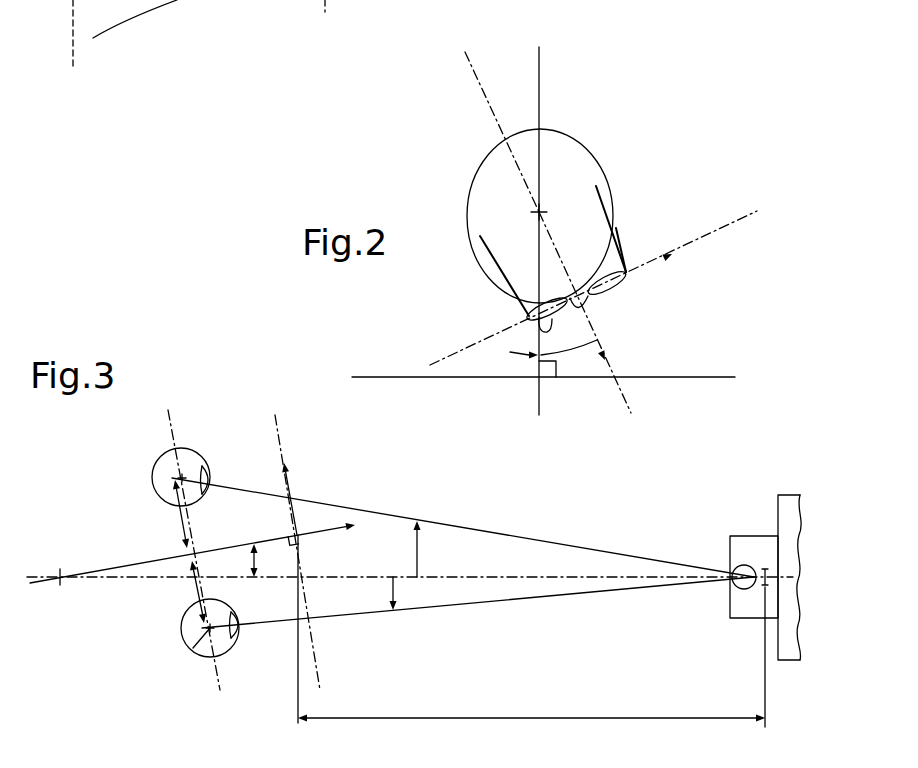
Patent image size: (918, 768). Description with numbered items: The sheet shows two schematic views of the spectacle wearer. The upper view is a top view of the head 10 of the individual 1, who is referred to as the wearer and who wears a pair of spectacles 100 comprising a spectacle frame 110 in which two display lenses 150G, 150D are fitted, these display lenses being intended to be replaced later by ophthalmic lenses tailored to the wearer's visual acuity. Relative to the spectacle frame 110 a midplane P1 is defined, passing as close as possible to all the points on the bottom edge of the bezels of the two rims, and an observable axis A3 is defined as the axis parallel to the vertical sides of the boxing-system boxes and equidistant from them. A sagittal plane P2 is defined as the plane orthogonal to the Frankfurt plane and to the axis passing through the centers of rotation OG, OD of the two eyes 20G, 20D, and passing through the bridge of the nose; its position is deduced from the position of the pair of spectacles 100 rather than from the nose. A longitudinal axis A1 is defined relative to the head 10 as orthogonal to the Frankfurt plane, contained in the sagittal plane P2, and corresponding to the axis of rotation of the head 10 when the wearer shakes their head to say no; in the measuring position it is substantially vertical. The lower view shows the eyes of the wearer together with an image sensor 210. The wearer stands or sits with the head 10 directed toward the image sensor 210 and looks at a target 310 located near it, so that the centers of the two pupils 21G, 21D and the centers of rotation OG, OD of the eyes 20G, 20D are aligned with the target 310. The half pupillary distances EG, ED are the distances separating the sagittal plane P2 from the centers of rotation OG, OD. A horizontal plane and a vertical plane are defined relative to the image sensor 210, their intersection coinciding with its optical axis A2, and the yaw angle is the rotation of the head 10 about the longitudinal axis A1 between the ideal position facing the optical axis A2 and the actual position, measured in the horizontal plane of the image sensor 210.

In FIG. 2, the individual 1 is at (609, 95).
In FIG. 2, the head 10 is at (596, 146).
In FIG. 2, the pair of spectacles 100 is at (614, 198).
In FIG. 2, the spectacle frame 110 is at (617, 219).
In FIG. 2, the left display lens 150G is at (612, 292).
In FIG. 2, the right display lens 150D is at (532, 326).
In FIG. 2, the longitudinal axis A1 is at (537, 212).
In FIG. 3, the longitudinal axis A1 is at (60, 575).
In FIG. 2, the optical axis A2 is at (540, 77).
In FIG. 3, the optical axis A2 is at (445, 577).
In FIG. 2, the observable axis A3 is at (607, 334).
In FIG. 3, the observable axis A3 is at (297, 535).
In FIG. 2, the midplane P1 is at (753, 216).
In FIG. 2, the sagittal plane P2 is at (473, 72).
In FIG. 3, the sagittal plane P2 is at (123, 566).
In FIG. 3, the center of rotation of the left eye OG is at (190, 450).
In FIG. 3, the center of rotation of the right eye OD is at (195, 653).
In FIG. 3, the left eye 20G is at (143, 477).
In FIG. 3, the right eye 20D is at (176, 643).
In FIG. 3, the left pupil 21G is at (233, 478).
In FIG. 3, the right pupil 21D is at (243, 640).
In FIG. 3, the left half pupillary distance EG is at (178, 525).
In FIG. 3, the right half pupillary distance ED is at (197, 588).
In FIG. 3, the image sensor 210 is at (785, 474).
In FIG. 3, the target 310 is at (765, 590).